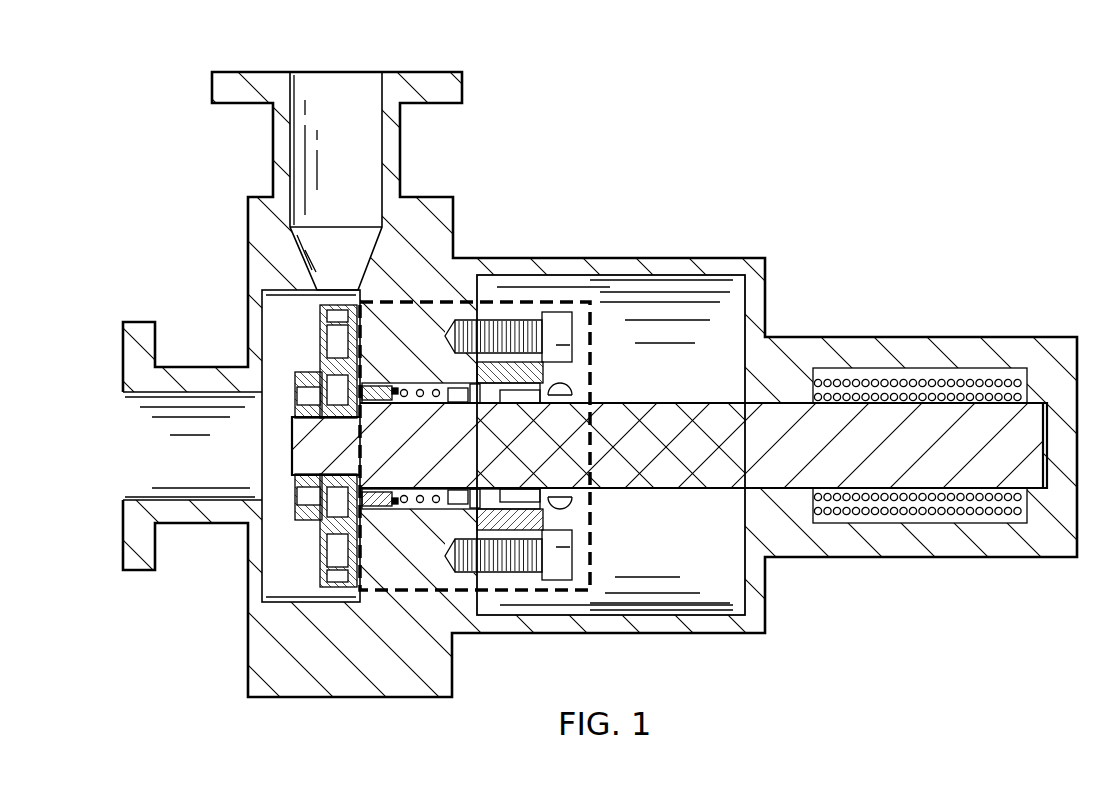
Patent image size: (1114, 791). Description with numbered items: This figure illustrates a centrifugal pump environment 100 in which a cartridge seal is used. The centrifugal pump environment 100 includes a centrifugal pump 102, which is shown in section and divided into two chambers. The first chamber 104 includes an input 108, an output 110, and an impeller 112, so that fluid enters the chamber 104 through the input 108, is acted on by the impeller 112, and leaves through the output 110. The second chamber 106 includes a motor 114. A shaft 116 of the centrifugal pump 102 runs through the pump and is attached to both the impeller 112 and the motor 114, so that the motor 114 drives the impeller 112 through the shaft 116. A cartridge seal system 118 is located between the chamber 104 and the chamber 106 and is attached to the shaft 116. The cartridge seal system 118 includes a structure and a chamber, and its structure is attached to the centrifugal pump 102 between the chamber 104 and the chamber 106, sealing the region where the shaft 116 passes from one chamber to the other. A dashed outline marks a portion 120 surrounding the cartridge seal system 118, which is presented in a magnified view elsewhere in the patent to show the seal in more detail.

The centrifugal pump environment 100 is at (823, 150).
The centrifugal pump 102 is at (181, 151).
The chamber 104 is at (312, 335).
The chamber 106 is at (660, 292).
The input 108 is at (132, 447).
The output 110 is at (334, 80).
The impeller 112 is at (307, 522).
The motor 114 is at (951, 330).
The shaft 116 is at (670, 403).
The cartridge seal system 118 is at (428, 548).
The portion 120 is at (602, 520).